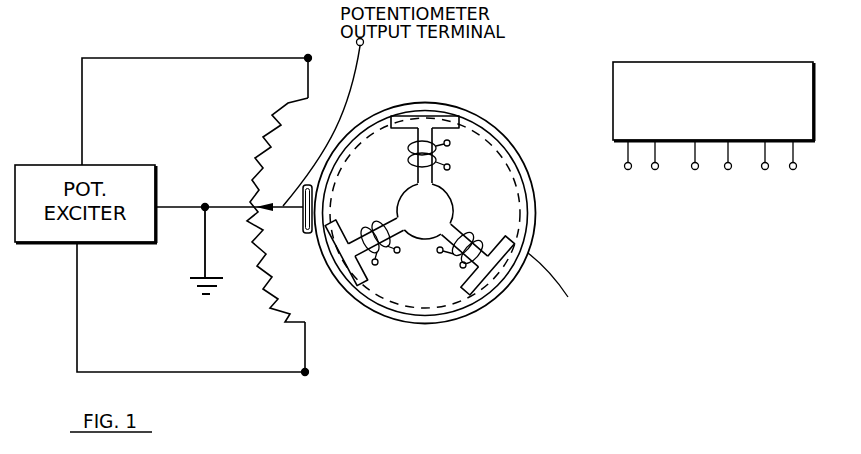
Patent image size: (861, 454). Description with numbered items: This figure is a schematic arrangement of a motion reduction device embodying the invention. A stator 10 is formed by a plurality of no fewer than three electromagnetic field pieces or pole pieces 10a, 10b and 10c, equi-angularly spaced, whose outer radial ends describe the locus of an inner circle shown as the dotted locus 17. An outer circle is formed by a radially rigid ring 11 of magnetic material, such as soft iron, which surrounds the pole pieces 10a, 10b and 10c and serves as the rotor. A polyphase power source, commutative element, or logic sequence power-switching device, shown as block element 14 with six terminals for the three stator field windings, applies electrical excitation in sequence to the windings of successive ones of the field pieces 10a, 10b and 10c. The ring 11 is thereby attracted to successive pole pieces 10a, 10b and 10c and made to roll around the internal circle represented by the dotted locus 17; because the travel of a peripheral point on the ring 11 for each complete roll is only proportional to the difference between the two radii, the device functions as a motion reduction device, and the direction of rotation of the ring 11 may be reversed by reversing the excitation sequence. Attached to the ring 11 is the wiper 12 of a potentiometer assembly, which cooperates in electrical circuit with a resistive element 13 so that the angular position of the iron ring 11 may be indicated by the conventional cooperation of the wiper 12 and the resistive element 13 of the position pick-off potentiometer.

The stator 10 is at (422, 200).
The pole piece 10a is at (424, 128).
The pole piece 10b is at (490, 272).
The pole piece 10c is at (343, 258).
The ring 11 is at (490, 121).
The wiper 12 is at (285, 212).
The resistive element 13 is at (267, 302).
The logic sequence power-switching device 14 is at (785, 97).
The dotted locus 17 is at (507, 162).